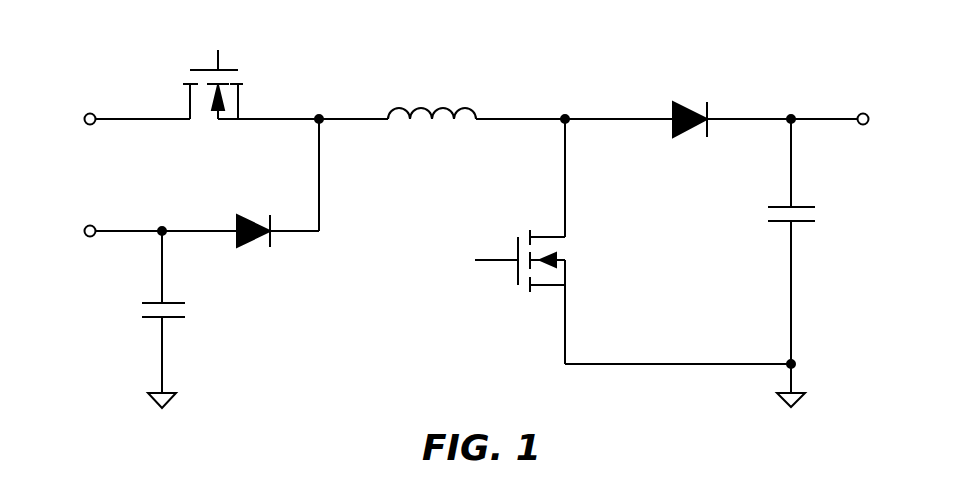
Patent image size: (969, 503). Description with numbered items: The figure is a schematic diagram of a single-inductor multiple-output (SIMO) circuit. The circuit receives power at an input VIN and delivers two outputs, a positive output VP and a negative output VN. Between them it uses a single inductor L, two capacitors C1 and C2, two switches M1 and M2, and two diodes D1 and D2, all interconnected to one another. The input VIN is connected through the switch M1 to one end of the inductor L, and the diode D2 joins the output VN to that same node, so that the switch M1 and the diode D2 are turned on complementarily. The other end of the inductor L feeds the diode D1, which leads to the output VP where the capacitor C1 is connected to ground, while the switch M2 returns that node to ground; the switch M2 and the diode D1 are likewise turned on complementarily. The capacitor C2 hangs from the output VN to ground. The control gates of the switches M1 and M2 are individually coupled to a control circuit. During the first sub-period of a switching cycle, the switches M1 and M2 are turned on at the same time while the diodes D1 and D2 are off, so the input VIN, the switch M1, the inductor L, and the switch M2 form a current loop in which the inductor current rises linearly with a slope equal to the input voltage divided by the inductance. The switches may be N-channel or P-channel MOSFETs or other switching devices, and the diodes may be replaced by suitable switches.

The input VIN is at (116, 119).
The output VN is at (106, 229).
The output VP is at (848, 119).
The switch M1 is at (251, 84).
The switch M2 is at (633, 241).
The inductor L is at (442, 98).
The diode D1 is at (678, 105).
The diode D2 is at (240, 219).
The capacitor C1 is at (809, 241).
The capacitor C2 is at (146, 312).